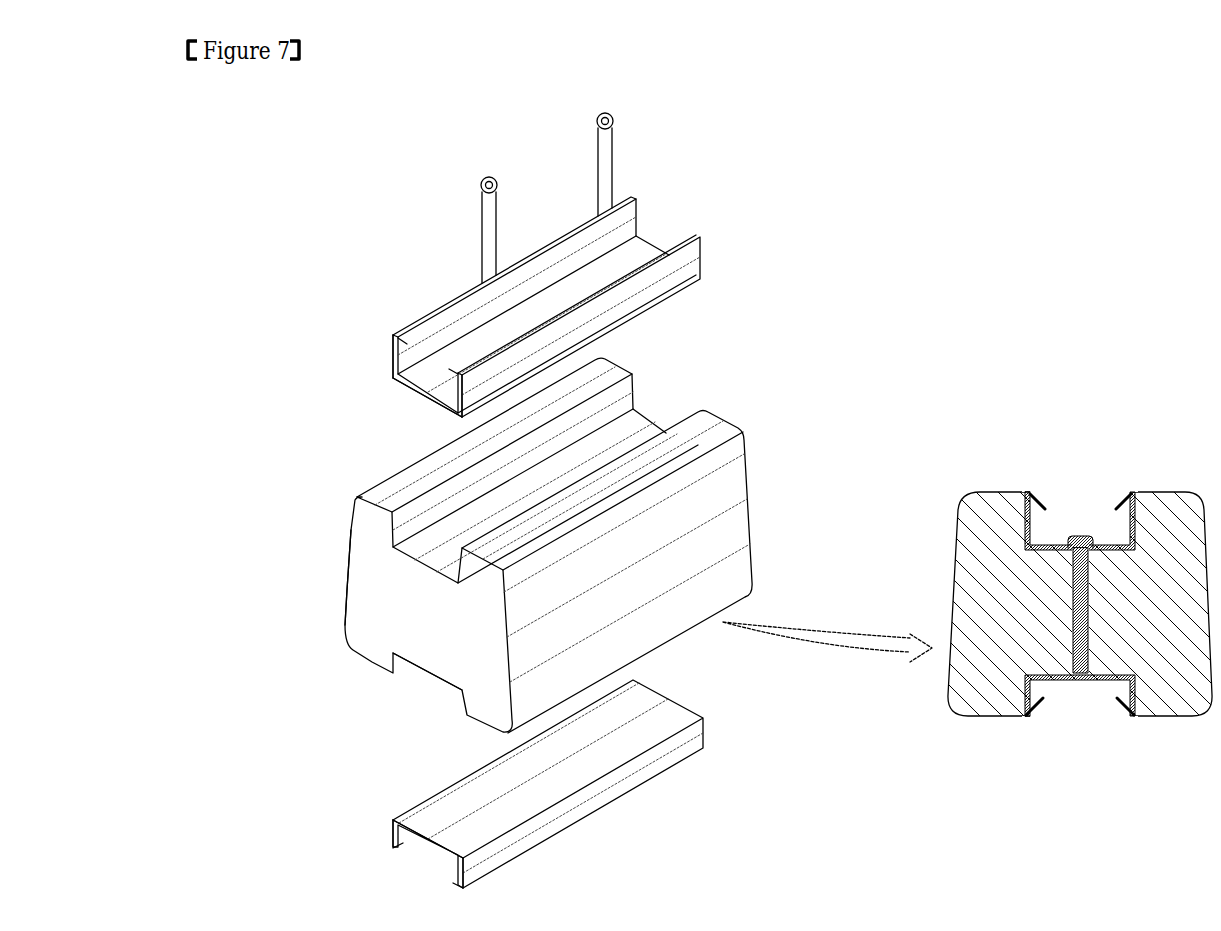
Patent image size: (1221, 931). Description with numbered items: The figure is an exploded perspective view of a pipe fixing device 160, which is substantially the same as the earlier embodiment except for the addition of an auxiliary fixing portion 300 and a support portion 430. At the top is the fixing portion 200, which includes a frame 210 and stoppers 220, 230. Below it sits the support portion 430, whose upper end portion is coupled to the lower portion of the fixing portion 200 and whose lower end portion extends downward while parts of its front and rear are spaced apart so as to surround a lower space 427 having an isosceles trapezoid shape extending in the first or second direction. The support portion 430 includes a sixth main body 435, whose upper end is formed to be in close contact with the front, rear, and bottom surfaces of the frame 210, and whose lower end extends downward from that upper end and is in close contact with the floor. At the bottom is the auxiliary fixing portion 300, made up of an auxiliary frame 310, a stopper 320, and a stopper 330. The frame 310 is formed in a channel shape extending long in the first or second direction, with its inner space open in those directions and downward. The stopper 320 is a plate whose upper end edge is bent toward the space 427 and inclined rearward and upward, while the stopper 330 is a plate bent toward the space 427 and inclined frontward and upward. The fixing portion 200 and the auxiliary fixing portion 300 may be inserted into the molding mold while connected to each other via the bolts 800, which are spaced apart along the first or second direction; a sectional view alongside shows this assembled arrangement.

The pipe fixing device 160 is at (327, 238).
The fixing portion 200 is at (318, 353).
The frame 210 is at (428, 392).
The stopper 220 is at (405, 353).
The stopper 230 is at (455, 382).
The auxiliary fixing portion 300 is at (302, 810).
The auxiliary frame 310 is at (423, 812).
The stopper 320 is at (393, 843).
The stopper 330 is at (458, 862).
The lower space 427 is at (440, 681).
The support portion 430 is at (237, 581).
The sixth main body 435 is at (376, 602).
The bolts 800 is at (489, 178).